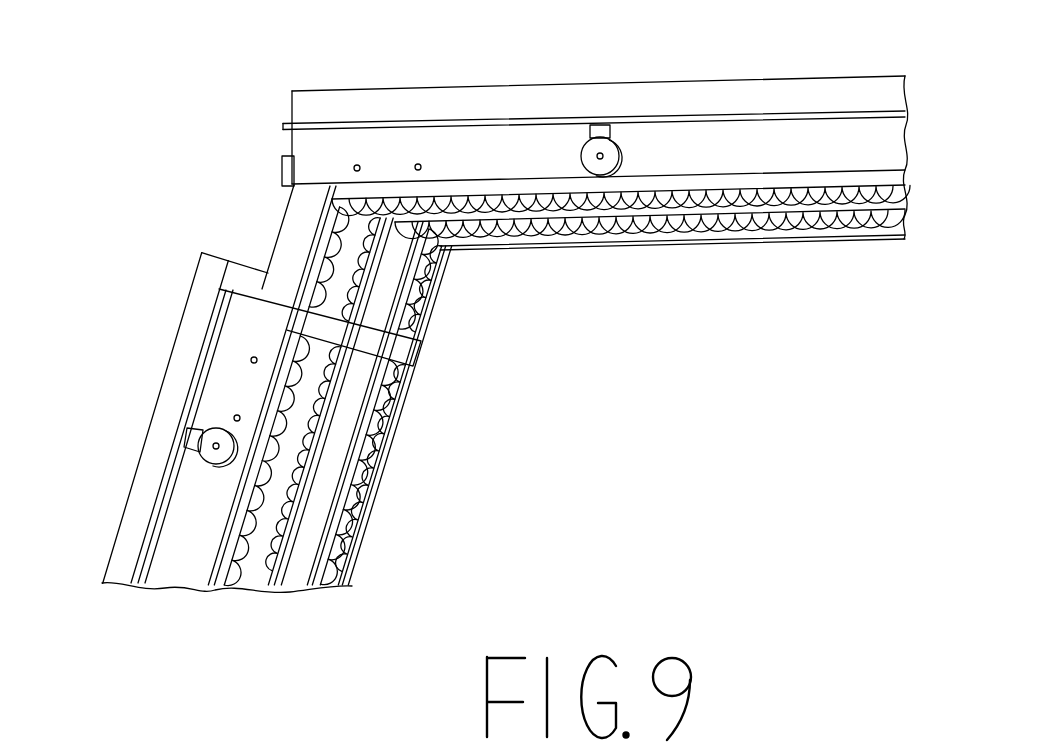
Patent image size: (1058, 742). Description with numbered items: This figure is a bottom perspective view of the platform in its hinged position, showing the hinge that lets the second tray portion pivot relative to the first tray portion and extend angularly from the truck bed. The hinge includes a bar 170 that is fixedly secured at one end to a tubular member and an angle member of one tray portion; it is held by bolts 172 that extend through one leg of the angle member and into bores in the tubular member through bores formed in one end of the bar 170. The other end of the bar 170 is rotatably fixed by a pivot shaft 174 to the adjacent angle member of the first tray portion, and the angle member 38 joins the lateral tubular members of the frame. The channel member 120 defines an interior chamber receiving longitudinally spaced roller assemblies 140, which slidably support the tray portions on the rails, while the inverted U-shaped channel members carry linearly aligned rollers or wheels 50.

The angle member 38 is at (662, 148).
The pivot shaft 174 is at (357, 165).
The bar 170 is at (293, 230).
The bolts 172 is at (128, 256).
The channel member 120 is at (209, 411).
The roller assemblies 140 is at (212, 458).
The rollers or wheels 50 is at (305, 710).